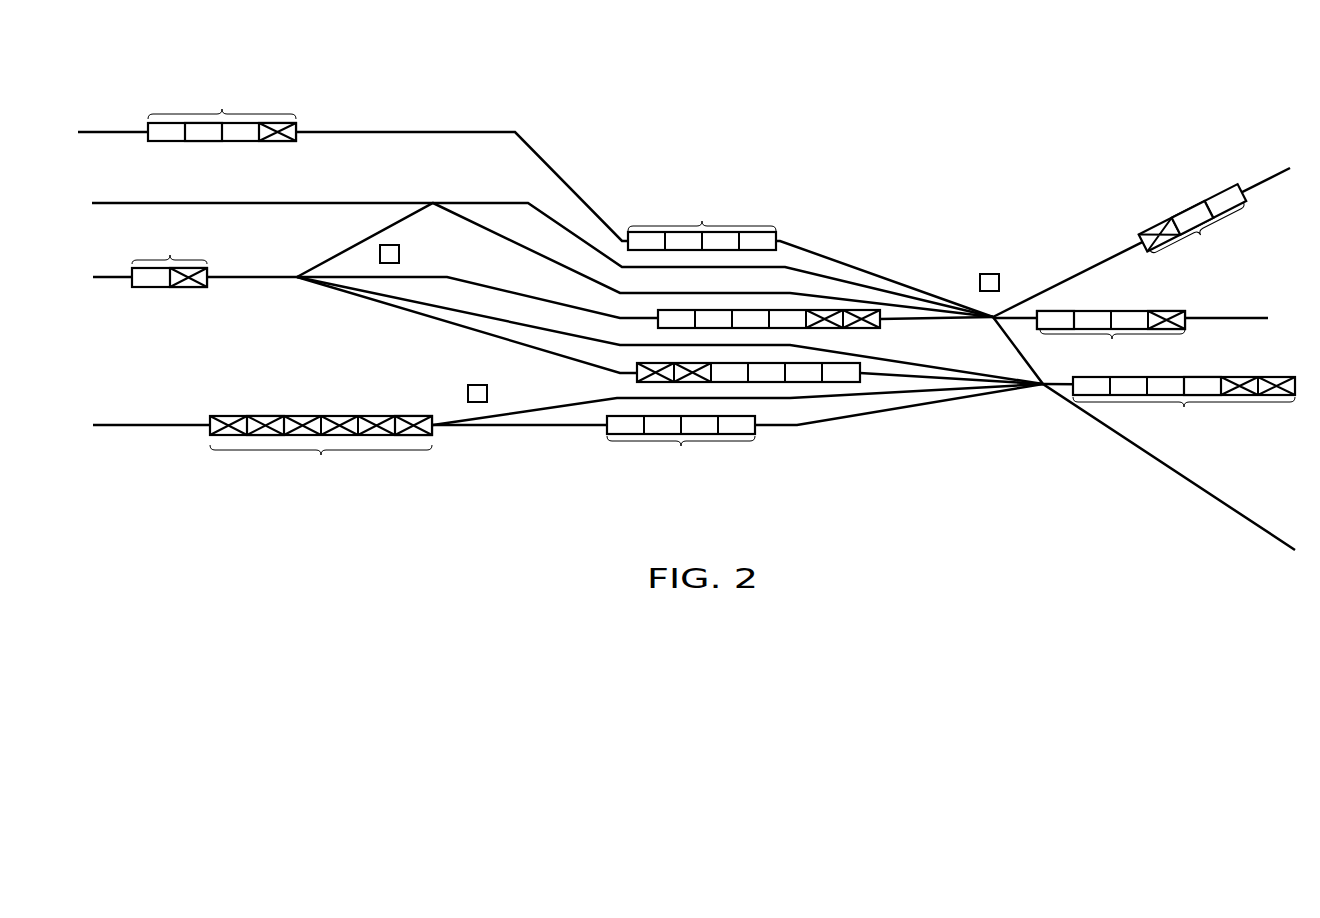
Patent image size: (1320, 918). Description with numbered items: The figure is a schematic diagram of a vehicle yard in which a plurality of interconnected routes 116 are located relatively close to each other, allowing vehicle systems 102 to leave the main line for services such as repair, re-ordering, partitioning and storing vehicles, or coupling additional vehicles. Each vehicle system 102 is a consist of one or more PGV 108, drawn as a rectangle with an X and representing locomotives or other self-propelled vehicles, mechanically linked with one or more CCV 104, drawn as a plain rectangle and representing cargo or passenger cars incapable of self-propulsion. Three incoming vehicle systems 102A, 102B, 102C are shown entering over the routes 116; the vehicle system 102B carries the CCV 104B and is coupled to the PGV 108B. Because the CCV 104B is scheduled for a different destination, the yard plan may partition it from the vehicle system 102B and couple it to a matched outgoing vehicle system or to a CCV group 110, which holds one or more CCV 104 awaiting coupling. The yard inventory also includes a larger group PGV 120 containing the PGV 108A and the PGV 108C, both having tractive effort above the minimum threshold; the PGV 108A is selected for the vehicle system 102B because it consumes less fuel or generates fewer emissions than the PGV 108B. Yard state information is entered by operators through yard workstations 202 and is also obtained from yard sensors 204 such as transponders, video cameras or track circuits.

The vehicle system 102 is at (1113, 339).
The vehicle system 102A is at (172, 255).
The vehicle system 102B is at (222, 109).
The vehicle system 102C is at (1203, 236).
The CCV 104 is at (1192, 214).
The CCV 104B is at (203, 142).
The PGV 108 is at (188, 288).
The PGV 108A is at (408, 417).
The PGV 108B is at (272, 142).
The PGV 108C is at (262, 415).
The CCV group 110 is at (703, 220).
The routes 116 is at (515, 130).
The group PGV 120 is at (321, 455).
The yard workstation 202 is at (489, 393).
The yard sensor 204 is at (401, 252).